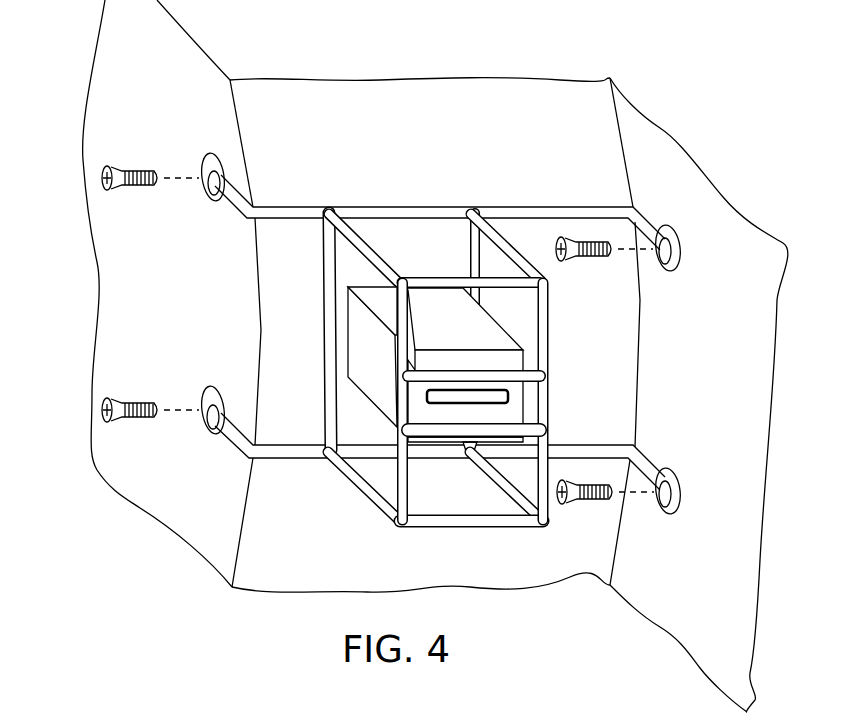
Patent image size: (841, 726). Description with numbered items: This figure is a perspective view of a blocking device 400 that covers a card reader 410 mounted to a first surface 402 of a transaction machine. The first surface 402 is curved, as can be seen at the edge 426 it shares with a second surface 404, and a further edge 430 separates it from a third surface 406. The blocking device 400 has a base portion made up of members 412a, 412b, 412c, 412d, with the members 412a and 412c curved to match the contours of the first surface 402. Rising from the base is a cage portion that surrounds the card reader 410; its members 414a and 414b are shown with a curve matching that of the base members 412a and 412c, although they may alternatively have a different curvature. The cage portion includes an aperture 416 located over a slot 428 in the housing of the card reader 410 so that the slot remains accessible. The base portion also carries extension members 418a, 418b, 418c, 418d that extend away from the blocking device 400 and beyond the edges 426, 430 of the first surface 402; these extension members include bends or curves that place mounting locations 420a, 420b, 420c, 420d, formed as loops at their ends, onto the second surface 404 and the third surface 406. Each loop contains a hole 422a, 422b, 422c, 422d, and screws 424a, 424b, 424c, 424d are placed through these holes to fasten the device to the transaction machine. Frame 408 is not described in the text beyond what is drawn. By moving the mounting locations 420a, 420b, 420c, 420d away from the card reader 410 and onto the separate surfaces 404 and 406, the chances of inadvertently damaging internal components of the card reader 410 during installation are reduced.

The blocking device 400 is at (528, 60).
The first surface 402 is at (317, 561).
The second surface 404 is at (162, 561).
The third surface 406 is at (735, 601).
The mounting frame 408 is at (471, 196).
The card reader 410 is at (603, 356).
The member 412a is at (327, 318).
The member 412b is at (438, 459).
The member 412c is at (469, 254).
The member 412d is at (399, 206).
The member 414a is at (402, 478).
The member 414b is at (536, 480).
The aperture 416 is at (535, 403).
The extension member 418a is at (288, 444).
The extension member 418b is at (597, 444).
The extension member 418c is at (588, 206).
The extension member 418d is at (288, 206).
The mounting location 420a is at (212, 387).
The mounting location 420b is at (671, 469).
The mounting location 420c is at (668, 226).
The mounting location 420d is at (209, 155).
The hole 422a is at (208, 429).
The hole 422b is at (667, 513).
The hole 422c is at (674, 270).
The hole 422d is at (212, 195).
The screw 424a is at (134, 423).
The screw 424b is at (589, 506).
The screw 424c is at (583, 262).
The screw 424d is at (135, 191).
The edge 426 is at (238, 86).
The slot 428 is at (466, 396).
The edge 430 is at (632, 84).